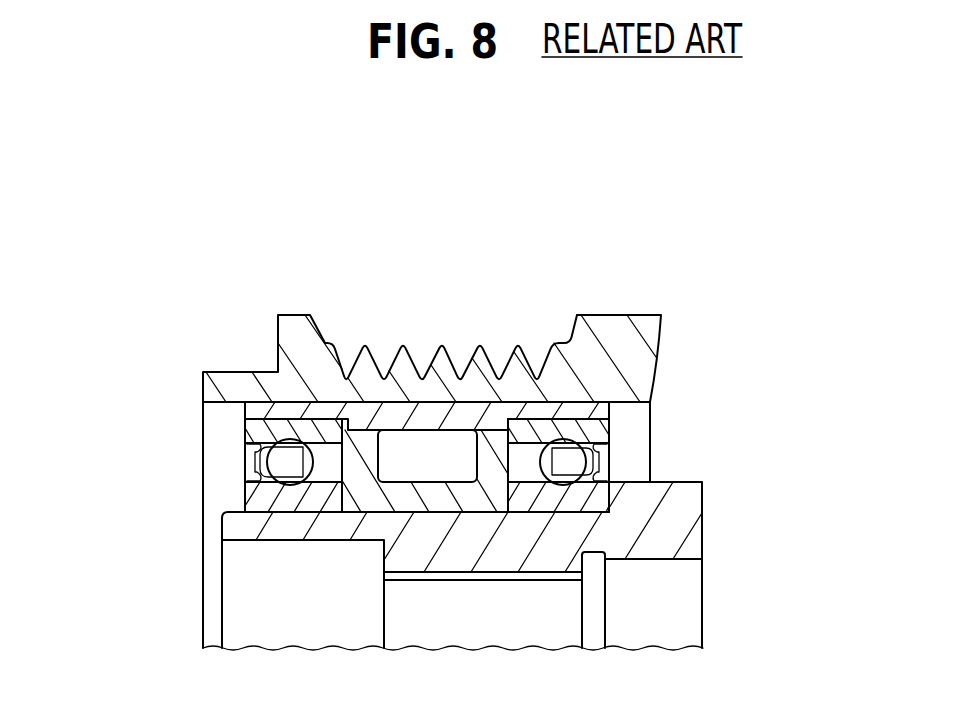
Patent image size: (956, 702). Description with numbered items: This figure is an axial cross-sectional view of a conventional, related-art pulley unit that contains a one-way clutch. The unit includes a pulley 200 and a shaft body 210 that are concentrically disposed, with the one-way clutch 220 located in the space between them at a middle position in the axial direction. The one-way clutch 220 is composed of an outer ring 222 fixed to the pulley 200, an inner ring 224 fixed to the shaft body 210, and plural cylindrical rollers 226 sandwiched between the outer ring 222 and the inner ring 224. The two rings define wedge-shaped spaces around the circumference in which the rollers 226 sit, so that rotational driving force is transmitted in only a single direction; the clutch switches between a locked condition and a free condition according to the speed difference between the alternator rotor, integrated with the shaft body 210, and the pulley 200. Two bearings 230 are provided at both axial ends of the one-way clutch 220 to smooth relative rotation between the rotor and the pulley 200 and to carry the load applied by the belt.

The pulley 200 is at (630, 348).
The shaft body 210 is at (680, 502).
The one-way clutch 220 is at (542, 175).
The outer ring 222 is at (375, 412).
The inner ring 224 is at (452, 493).
The cylindrical rollers 226 is at (423, 450).
The bearings 230 is at (247, 453).